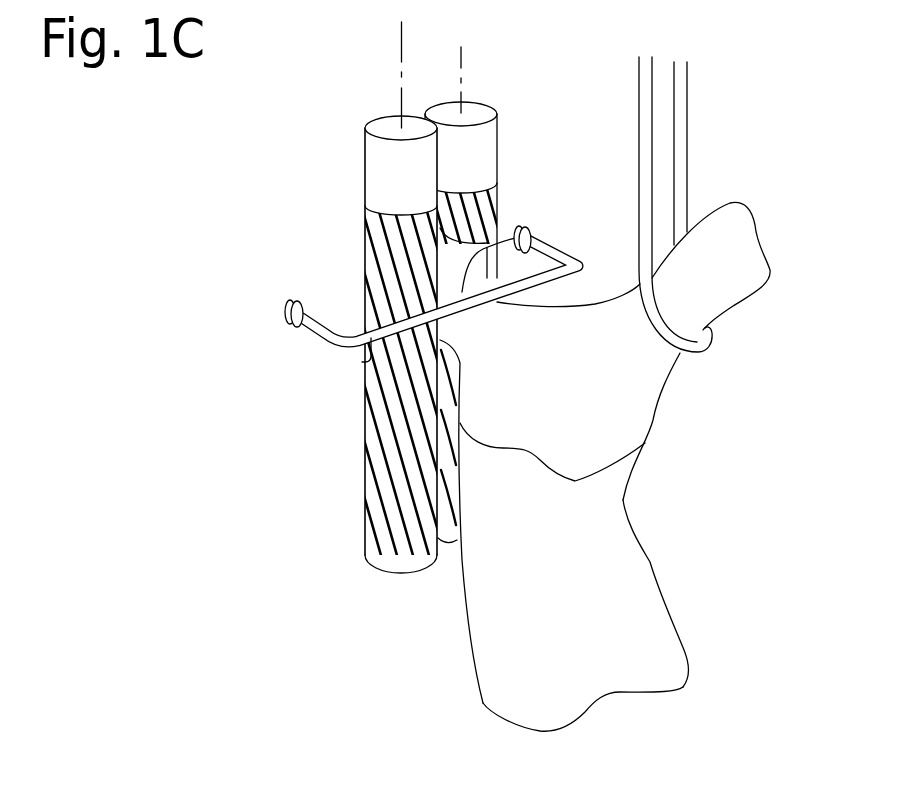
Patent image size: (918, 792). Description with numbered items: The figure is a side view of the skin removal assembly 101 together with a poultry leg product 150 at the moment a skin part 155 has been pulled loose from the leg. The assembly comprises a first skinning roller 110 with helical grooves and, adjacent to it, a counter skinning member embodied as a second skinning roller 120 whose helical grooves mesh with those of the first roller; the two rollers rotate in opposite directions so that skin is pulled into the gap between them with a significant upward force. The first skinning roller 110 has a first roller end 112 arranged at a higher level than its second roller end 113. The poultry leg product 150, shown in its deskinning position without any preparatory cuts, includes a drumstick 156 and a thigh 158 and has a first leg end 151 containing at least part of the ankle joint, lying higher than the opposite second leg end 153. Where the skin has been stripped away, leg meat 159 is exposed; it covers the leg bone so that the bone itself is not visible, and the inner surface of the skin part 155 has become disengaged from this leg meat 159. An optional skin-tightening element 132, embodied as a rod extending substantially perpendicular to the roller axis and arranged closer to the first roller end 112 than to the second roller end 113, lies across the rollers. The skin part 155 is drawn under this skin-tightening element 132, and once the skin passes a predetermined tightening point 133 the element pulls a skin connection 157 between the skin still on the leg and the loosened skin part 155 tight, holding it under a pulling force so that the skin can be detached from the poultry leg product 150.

The skin removal assembly 101 is at (352, 146).
The first skinning roller 110 is at (386, 281).
The first roller end 112 is at (381, 99).
The second roller end 113 is at (380, 580).
The second skinning roller 120 is at (490, 217).
The skin-tightening element 132 is at (362, 362).
The predetermined tightening point 133 is at (289, 304).
The poultry leg product 150 is at (700, 477).
The first leg end 151 is at (768, 228).
The second leg end 153 is at (616, 706).
The skin part 155 is at (493, 327).
The drumstick 156 is at (640, 395).
The skin connection 157 is at (532, 234).
The thigh 158 is at (593, 608).
The leg meat 159 is at (603, 577).